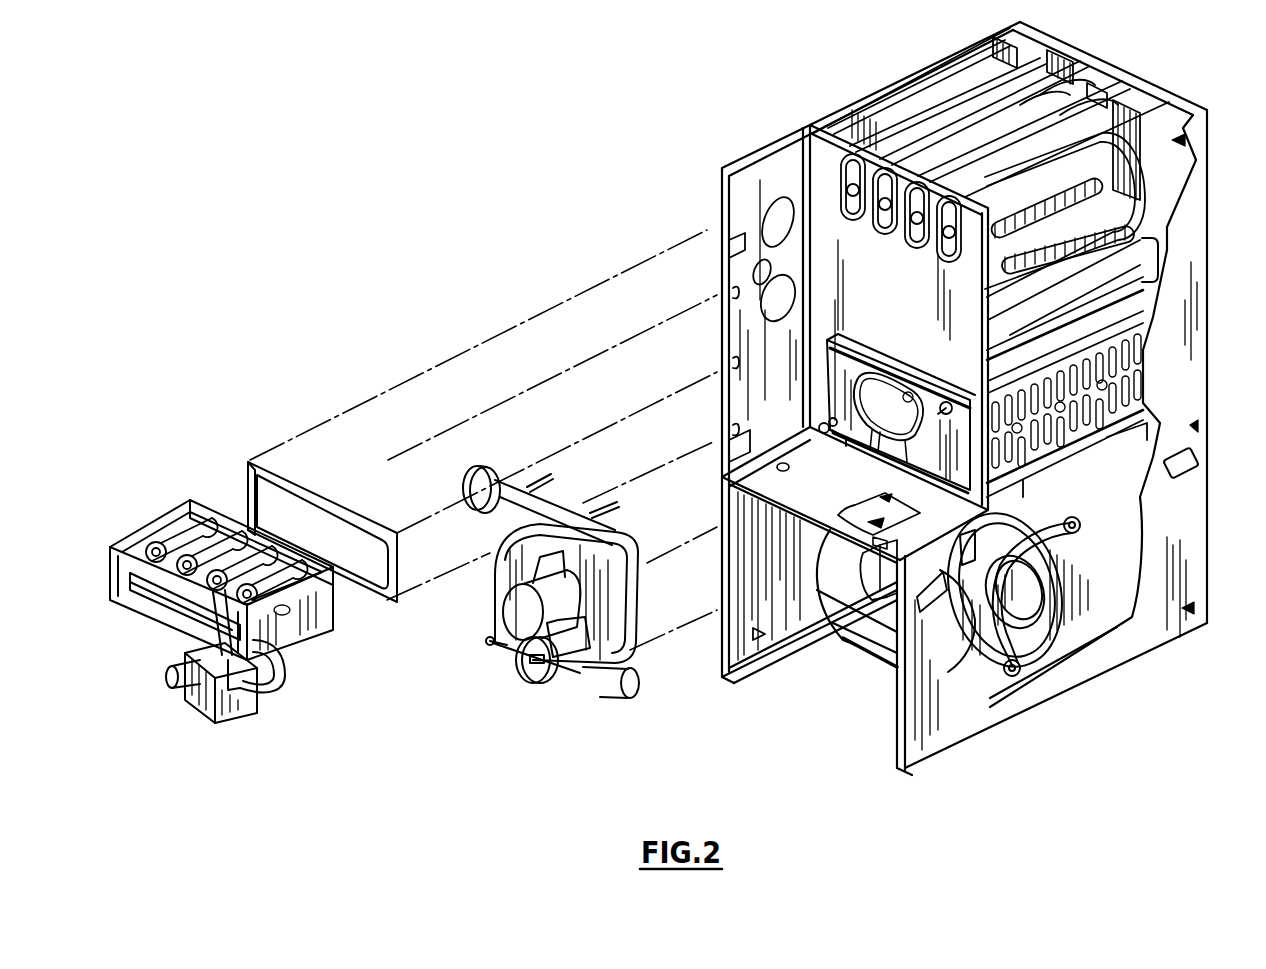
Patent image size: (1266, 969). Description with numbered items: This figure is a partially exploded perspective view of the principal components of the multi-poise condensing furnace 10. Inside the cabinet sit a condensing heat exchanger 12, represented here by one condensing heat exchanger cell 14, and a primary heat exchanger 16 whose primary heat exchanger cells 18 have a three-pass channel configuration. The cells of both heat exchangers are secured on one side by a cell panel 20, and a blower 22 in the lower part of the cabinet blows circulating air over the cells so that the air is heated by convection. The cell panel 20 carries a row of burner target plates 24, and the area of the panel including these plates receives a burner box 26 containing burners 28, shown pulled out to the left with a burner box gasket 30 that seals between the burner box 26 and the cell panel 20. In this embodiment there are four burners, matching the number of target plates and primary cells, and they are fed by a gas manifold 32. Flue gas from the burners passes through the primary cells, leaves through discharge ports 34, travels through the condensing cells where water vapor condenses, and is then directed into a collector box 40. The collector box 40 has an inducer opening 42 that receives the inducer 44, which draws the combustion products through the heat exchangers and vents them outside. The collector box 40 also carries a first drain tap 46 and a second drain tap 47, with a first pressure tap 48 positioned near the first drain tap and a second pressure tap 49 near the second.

The multi-poise condensing furnace 10 is at (1262, 428).
The condensing heat exchanger 12 is at (1126, 313).
The condensing heat exchanger cell 14 is at (1140, 390).
The primary heat exchanger 16 is at (1060, 58).
The primary heat exchanger cells 18 is at (1125, 188).
The cell panel 20 is at (906, 294).
The blower 22 is at (1040, 662).
The burner target plates 24 is at (848, 175).
The burner box 26 is at (160, 525).
The burners 28 is at (232, 540).
The burner box gasket 30 is at (308, 494).
The gas manifold 32 is at (283, 668).
The discharge ports 34 is at (1148, 262).
The collector box 40 is at (900, 480).
The inducer opening 42 is at (886, 392).
The inducer 44 is at (598, 609).
The first drain tap 46 is at (826, 424).
The second drain tap 47 is at (944, 402).
The first pressure tap 48 is at (845, 425).
The second pressure tap 49 is at (921, 400).